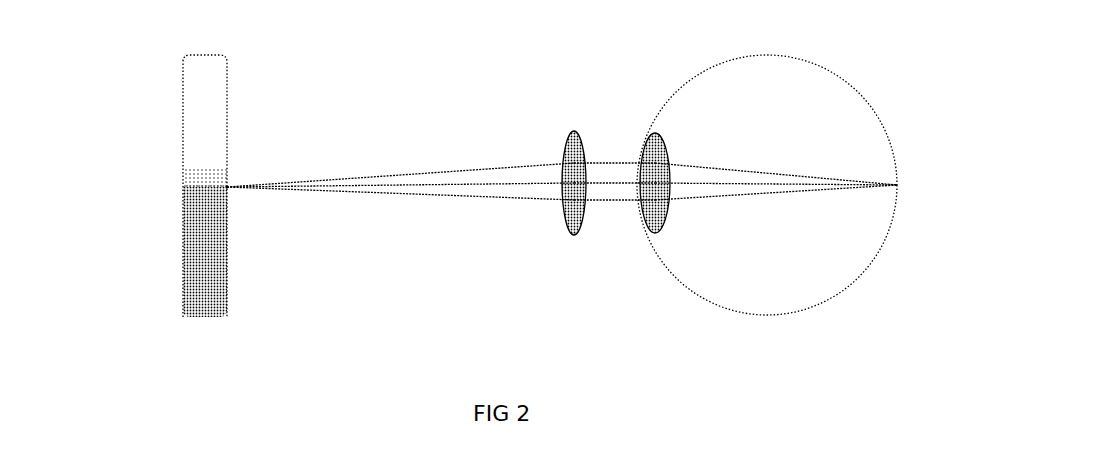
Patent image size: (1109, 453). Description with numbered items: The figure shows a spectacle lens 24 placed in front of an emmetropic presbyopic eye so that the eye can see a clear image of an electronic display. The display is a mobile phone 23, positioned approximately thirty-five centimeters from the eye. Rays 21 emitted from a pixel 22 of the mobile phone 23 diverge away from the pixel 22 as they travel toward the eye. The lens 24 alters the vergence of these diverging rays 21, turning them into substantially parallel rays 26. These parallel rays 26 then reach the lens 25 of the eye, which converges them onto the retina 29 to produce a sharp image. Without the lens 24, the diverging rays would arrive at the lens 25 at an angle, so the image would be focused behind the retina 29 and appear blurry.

The rays 21 is at (473, 168).
The pixel 22 is at (227, 187).
The mobile phone 23 is at (193, 177).
The lens 24 is at (573, 235).
The lens of the eye 25 is at (658, 232).
The parallel rays 26 is at (595, 163).
The retina 29 is at (897, 185).